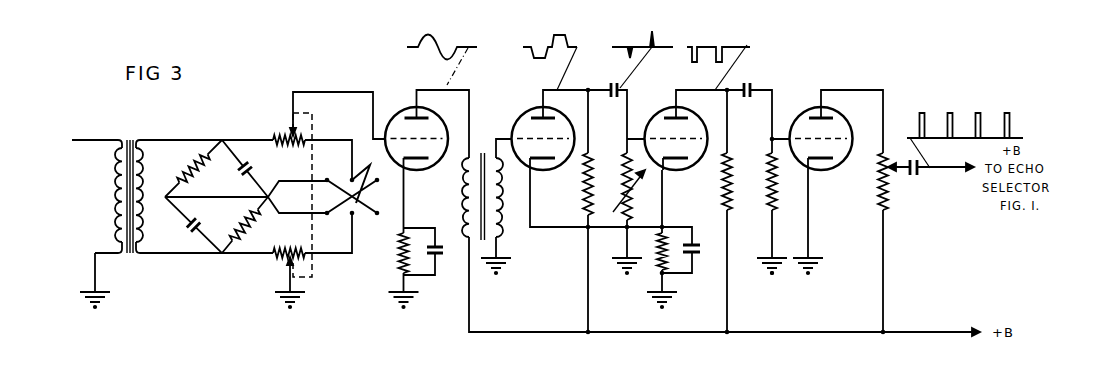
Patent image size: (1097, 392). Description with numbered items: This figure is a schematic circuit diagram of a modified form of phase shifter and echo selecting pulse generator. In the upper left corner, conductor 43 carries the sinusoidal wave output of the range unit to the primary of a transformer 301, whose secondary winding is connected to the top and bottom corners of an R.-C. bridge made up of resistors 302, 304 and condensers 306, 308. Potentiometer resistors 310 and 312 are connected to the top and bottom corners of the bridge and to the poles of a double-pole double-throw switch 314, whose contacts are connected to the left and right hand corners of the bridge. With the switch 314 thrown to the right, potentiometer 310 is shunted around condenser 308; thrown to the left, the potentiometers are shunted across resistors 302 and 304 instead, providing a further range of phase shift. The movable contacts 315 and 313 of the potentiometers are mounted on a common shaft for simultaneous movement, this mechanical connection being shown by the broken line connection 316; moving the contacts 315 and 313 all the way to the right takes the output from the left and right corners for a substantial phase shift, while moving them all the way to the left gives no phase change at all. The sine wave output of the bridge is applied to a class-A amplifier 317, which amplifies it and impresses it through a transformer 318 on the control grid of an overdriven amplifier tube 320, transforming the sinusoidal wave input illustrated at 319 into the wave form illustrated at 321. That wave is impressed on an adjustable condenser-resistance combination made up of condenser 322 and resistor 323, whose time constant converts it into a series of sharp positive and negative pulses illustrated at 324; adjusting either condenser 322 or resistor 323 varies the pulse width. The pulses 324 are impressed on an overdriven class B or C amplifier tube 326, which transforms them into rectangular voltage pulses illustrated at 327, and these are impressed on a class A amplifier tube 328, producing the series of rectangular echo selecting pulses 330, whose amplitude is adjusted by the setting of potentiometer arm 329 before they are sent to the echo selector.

The conductor 43 is at (87, 140).
The transformer 301 is at (129, 136).
The resistor 302 is at (198, 157).
The resistor 304 is at (253, 228).
The condenser 306 is at (257, 172).
The condenser 308 is at (191, 224).
The potentiometer resistor 310 is at (283, 138).
The potentiometer resistor 312 is at (277, 258).
The movable contact 313 is at (287, 272).
The double-pole double-throw switch 314 is at (354, 215).
The movable contact 315 is at (293, 100).
The broken line connection 316 is at (313, 272).
The class-A amplifier 317 is at (398, 112).
The transformer 318 is at (482, 241).
The sinusoidal wave input 319 is at (413, 47).
The overdriven amplifier tube 320 is at (527, 110).
The wave form 321 is at (527, 47).
The adjustable condenser 322 is at (610, 88).
The adjustable resistor 323 is at (621, 186).
The sharp pulses 324 is at (617, 47).
The overdriven class B or C amplifier tube 326 is at (660, 105).
The rectangular voltage pulses 327 is at (721, 60).
The class A amplifier tube 328 is at (808, 108).
The potentiometer arm 329 is at (931, 178).
The rectangular pulses 330 is at (1045, 113).